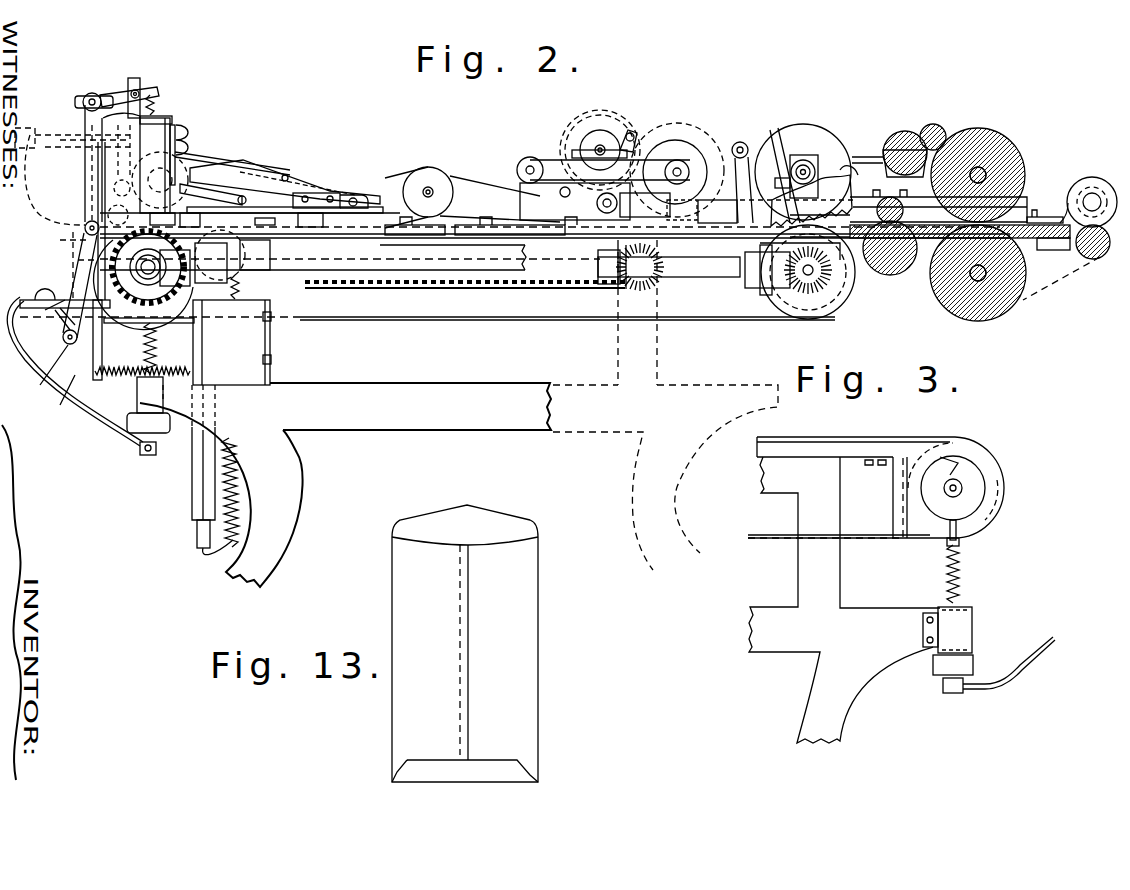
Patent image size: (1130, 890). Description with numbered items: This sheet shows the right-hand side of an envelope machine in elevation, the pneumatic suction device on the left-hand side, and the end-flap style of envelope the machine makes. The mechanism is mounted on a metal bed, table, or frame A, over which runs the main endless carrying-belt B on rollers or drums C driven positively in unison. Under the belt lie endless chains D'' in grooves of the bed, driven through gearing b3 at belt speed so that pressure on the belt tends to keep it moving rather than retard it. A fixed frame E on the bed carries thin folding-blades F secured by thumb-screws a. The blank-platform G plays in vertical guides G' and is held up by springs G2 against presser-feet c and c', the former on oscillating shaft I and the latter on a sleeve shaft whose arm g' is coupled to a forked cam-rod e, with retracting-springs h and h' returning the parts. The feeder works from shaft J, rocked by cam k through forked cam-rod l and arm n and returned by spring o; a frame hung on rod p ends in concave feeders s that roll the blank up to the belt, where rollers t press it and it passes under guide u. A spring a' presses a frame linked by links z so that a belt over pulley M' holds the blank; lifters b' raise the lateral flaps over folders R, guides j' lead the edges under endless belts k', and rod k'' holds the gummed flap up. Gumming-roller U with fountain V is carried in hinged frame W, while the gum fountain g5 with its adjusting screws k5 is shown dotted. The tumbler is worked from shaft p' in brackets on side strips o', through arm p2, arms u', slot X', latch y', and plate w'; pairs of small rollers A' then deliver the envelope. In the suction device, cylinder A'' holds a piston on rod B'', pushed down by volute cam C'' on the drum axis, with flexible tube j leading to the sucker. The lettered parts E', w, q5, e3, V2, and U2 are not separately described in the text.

In FIG. 2, the shaft J is at (116, 94).
In FIG. 2, the arm n is at (124, 96).
In FIG. 2, the spring o is at (156, 109).
In FIG. 2, the fixed frame E is at (157, 165).
In FIG. 2, the thumb-screws a is at (186, 140).
In FIG. 2, the spring a' is at (265, 169).
In FIG. 2, the screws k5 is at (72, 133).
In FIG. 2, the cam k is at (87, 147).
In FIG. 2, the fountain g5 is at (55, 180).
In FIG. 2, the rod w is at (83, 172).
In FIG. 2, the rollers t is at (153, 166).
In FIG. 2, the forked cam-rod l is at (179, 191).
In FIG. 2, the guide u is at (118, 218).
In FIG. 2, the link q5 is at (69, 266).
In FIG. 2, the endless belts k' is at (80, 259).
In FIG. 2, the rod p is at (82, 231).
In FIG. 2, the rollers or drums C is at (143, 280).
In FIG. 3, the rollers or drums C is at (931, 490).
In FIG. 2, the inclines or lifters b' is at (211, 259).
In FIG. 2, the gearing b3 is at (235, 255).
In FIG. 2, the block E' is at (286, 244).
In FIG. 2, the forked cam-rod e is at (230, 287).
In FIG. 2, the lateral folders R is at (285, 204).
In FIG. 2, the pulley M' is at (331, 191).
In FIG. 2, the folding-blades F is at (425, 186).
In FIG. 2, the rod k'' is at (404, 197).
In FIG. 2, the frame W is at (603, 168).
In FIG. 2, the fountain V is at (600, 143).
In FIG. 2, the gumming-roller U is at (677, 159).
In FIG. 2, the side strips o' is at (622, 193).
In FIG. 2, the plate w' is at (719, 211).
In FIG. 2, the shaft p' is at (743, 167).
In FIG. 2, the arm p2 is at (779, 165).
In FIG. 2, the links z is at (803, 162).
In FIG. 2, the slot X' is at (811, 165).
In FIG. 2, the arms u' is at (775, 175).
In FIG. 2, the latch y' is at (796, 191).
In FIG. 2, the lug e3 is at (847, 172).
In FIG. 2, the hatched roller V2 is at (899, 144).
In FIG. 2, the hatched roller U2 is at (978, 215).
In FIG. 2, the small rollers A' is at (1072, 210).
In FIG. 2, the main endless carrying-belt B is at (567, 323).
In FIG. 3, the main endless carrying-belt B is at (885, 496).
In FIG. 2, the endless chains D'' is at (465, 292).
In FIG. 2, the bed, table, or frame A is at (345, 485).
In FIG. 3, the bed, table, or frame A is at (852, 590).
In FIG. 2, the blank-platform G is at (217, 342).
In FIG. 2, the vertical guides G' is at (198, 470).
In FIG. 2, the springs G2 is at (237, 492).
In FIG. 2, the concave feeders s is at (149, 329).
In FIG. 2, the rod B'' is at (160, 348).
In FIG. 3, the rod B'' is at (970, 570).
In FIG. 2, the retracting-spring h is at (142, 361).
In FIG. 2, the retracting-spring h' is at (100, 348).
In FIG. 2, the cylinder A'' is at (139, 416).
In FIG. 3, the cylinder A'' is at (948, 650).
In FIG. 2, the guides j' is at (75, 367).
In FIG. 2, the shaft I is at (71, 294).
In FIG. 2, the presser-foot c is at (60, 323).
In FIG. 2, the presser-foot c' is at (51, 312).
In FIG. 2, the arm g' is at (51, 379).
In FIG. 3, the volute cam C'' is at (949, 503).
In FIG. 3, the flexible tube j is at (1009, 663).